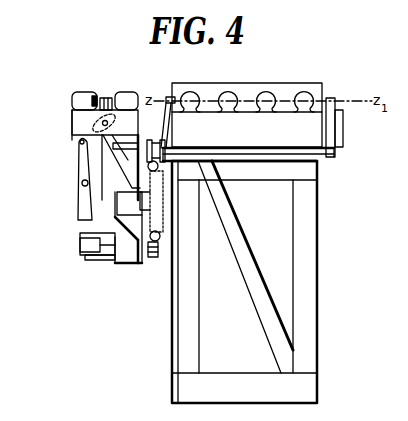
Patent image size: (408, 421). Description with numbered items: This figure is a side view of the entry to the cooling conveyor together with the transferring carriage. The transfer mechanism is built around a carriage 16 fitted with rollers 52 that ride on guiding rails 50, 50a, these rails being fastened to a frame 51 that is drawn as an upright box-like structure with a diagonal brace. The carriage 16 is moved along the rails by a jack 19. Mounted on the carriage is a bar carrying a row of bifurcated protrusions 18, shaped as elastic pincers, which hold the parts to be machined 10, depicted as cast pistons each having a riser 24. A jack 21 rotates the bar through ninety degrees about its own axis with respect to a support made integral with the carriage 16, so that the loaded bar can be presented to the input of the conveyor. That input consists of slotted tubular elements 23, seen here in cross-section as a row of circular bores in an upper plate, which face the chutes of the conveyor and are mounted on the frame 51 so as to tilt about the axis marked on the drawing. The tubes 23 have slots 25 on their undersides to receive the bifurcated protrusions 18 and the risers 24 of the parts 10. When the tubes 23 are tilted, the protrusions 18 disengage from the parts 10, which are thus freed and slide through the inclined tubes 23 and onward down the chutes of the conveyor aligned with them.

The parts to be machined 10 is at (83, 92).
The bifurcated protrusions 18 is at (74, 104).
The jack 21 is at (80, 190).
The carriage 16 is at (103, 200).
The jack 19 is at (125, 212).
The slotted tubular elements 23 is at (228, 93).
The riser 24 is at (193, 111).
The slots 25 is at (307, 111).
The rollers 52 is at (172, 177).
The guiding rail 50 is at (165, 162).
The guiding rail 50a is at (200, 243).
The frame 51 is at (305, 222).